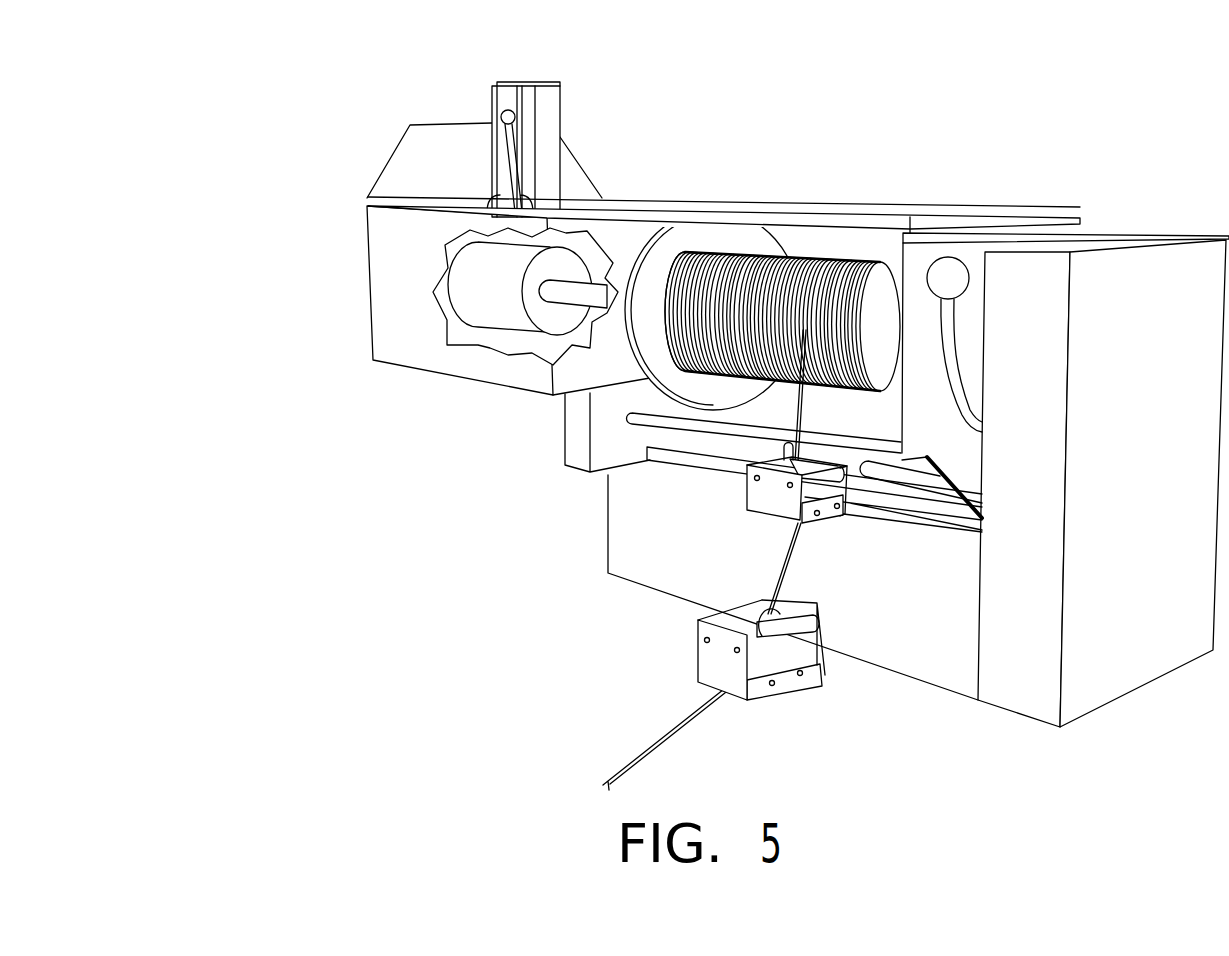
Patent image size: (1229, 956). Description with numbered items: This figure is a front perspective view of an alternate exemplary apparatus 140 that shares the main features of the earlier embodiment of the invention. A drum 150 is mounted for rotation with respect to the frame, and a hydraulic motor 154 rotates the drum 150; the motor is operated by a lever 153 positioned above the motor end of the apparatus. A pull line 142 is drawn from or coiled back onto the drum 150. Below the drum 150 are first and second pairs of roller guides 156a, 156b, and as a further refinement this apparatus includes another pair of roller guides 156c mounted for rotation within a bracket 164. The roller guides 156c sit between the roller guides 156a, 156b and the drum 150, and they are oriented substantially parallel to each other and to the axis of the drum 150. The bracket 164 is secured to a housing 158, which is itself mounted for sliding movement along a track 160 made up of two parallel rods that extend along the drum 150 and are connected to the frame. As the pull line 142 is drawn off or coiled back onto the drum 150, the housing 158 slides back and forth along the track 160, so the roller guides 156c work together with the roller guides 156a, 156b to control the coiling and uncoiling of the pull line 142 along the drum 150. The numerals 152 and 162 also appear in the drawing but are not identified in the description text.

The alternate exemplary apparatus 140 is at (668, 428).
The pull line 142 is at (694, 722).
The drum 150 is at (667, 253).
The housing 152 is at (395, 297).
The lever 153 is at (507, 127).
The hydraulic motor 154 is at (502, 315).
The first pair of roller guides 156a is at (778, 662).
The second pair of roller guides 156b is at (753, 617).
The roller guides 156c is at (845, 477).
The housing 158 is at (907, 490).
The track 160 is at (695, 428).
The lower bracket 162 is at (729, 692).
The bracket 164 is at (744, 593).